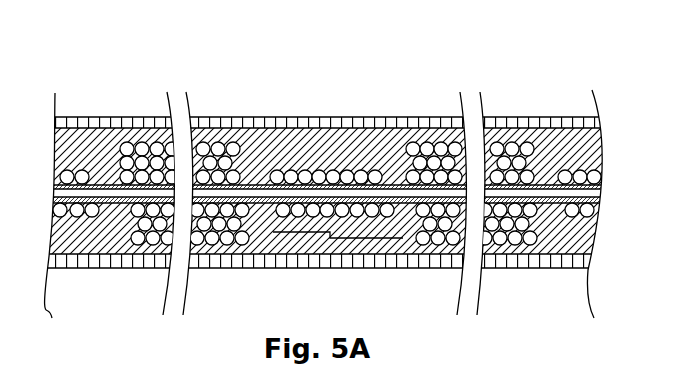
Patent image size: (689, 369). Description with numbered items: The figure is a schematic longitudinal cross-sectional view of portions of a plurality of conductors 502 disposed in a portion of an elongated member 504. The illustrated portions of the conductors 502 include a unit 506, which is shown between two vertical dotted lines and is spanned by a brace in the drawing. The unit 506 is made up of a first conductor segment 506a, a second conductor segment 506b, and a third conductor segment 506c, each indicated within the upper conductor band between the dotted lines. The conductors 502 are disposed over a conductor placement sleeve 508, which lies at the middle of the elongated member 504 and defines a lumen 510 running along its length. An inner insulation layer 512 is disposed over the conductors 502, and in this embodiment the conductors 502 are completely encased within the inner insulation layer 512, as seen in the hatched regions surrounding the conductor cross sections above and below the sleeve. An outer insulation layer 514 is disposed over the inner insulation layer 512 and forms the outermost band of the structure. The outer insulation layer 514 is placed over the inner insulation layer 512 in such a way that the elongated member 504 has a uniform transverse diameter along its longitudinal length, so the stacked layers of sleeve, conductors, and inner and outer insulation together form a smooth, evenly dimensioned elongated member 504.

The conductors 502 is at (330, 237).
The elongated member 504 is at (142, 98).
The unit 506 is at (259, 302).
The first conductor segment 506a is at (320, 158).
The second conductor segment 506b is at (403, 153).
The third conductor segment 506c is at (517, 130).
The conductor placement sleeve 508 is at (118, 200).
The lumen 510 is at (113, 193).
The inner insulation layer 512 is at (88, 157).
The outer insulation layer 514 is at (235, 125).